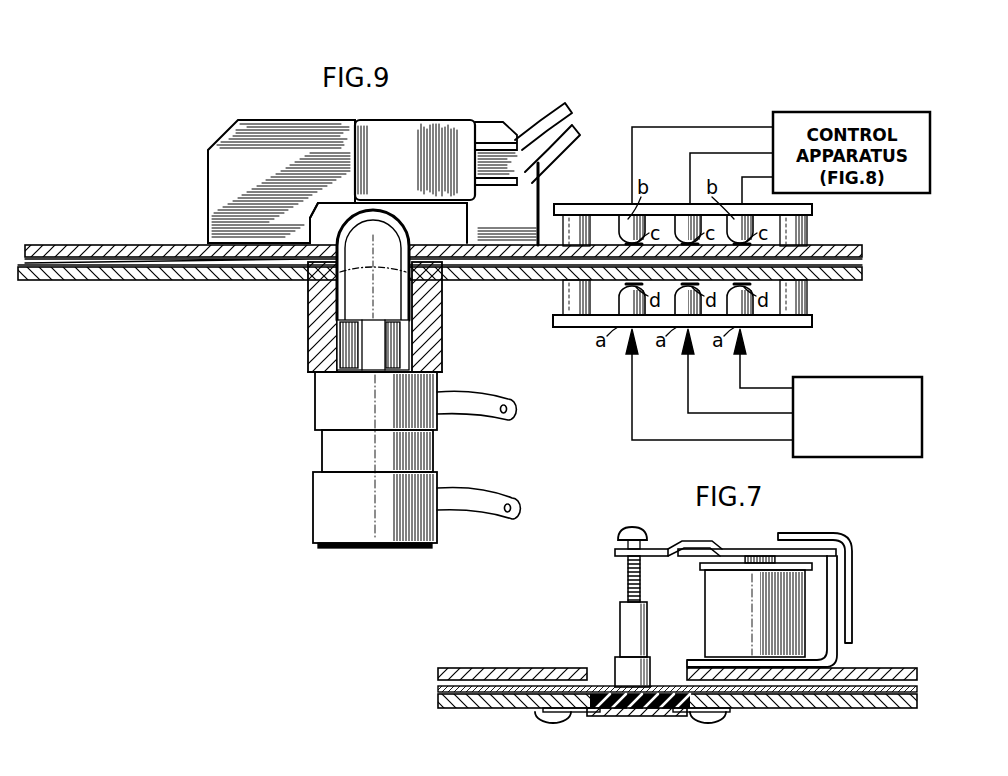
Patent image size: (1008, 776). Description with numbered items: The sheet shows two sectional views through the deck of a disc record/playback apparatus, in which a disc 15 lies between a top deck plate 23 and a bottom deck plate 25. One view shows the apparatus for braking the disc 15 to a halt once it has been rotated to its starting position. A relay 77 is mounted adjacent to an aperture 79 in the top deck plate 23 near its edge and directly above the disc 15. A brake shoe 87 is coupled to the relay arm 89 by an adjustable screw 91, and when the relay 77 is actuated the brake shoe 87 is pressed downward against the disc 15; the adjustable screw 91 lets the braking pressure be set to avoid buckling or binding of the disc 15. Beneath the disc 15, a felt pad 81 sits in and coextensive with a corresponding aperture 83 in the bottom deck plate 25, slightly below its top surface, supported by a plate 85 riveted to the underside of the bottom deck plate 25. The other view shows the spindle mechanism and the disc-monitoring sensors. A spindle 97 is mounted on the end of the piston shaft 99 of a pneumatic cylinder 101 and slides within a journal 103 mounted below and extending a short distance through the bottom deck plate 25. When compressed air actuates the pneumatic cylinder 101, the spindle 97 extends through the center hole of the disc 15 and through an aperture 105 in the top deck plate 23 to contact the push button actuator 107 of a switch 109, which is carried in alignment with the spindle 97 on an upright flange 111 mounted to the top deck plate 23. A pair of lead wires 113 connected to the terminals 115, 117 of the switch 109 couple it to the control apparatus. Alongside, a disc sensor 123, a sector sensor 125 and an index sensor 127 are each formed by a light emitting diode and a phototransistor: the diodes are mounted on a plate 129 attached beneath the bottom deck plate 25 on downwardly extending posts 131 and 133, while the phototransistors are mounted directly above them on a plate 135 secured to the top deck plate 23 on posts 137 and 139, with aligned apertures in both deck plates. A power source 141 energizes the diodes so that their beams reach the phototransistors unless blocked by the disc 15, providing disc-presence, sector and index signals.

In FIG. 9, the disc 15 is at (35, 281).
In FIG. 7, the disc 15 is at (493, 686).
In FIG. 9, the top deck plate 23 is at (105, 281).
In FIG. 7, the top deck plate 23 is at (450, 668).
In FIG. 9, the bottom deck plate 25 is at (40, 245).
In FIG. 7, the bottom deck plate 25 is at (455, 709).
In FIG. 7, the relay 77 is at (853, 565).
In FIG. 7, the aperture 79 is at (612, 660).
In FIG. 7, the felt pad 81 is at (640, 707).
In FIG. 7, the aperture 83 is at (691, 713).
In FIG. 7, the plate 85 is at (586, 716).
In FIG. 7, the brake shoe 87 is at (652, 662).
In FIG. 7, the relay arm 89 is at (693, 540).
In FIG. 7, the adjustable screw 91 is at (627, 574).
In FIG. 9, the spindle 97 is at (345, 300).
In FIG. 9, the piston shaft 99 is at (368, 337).
In FIG. 9, the pneumatic cylinder 101 is at (333, 443).
In FIG. 9, the journal 103 is at (440, 343).
In FIG. 9, the aperture 105 is at (441, 251).
In FIG. 9, the push button actuator 107 is at (372, 203).
In FIG. 9, the switch 109 is at (415, 128).
In FIG. 9, the upright flange 111 is at (217, 197).
In FIG. 9, the lead wires 113 is at (539, 132).
In FIG. 9, the terminal 115 is at (512, 140).
In FIG. 9, the terminal 117 is at (494, 183).
In FIG. 9, the disc sensor 123 is at (742, 92).
In FIG. 9, the sector sensor 125 is at (690, 92).
In FIG. 9, the index sensor 127 is at (632, 92).
In FIG. 9, the plate 129 is at (580, 329).
In FIG. 9, the post 131 is at (556, 295).
In FIG. 9, the post 133 is at (808, 300).
In FIG. 9, the plate 135 is at (618, 208).
In FIG. 9, the post 137 is at (565, 232).
In FIG. 9, the post 139 is at (808, 224).
In FIG. 9, the power source 141 is at (862, 380).